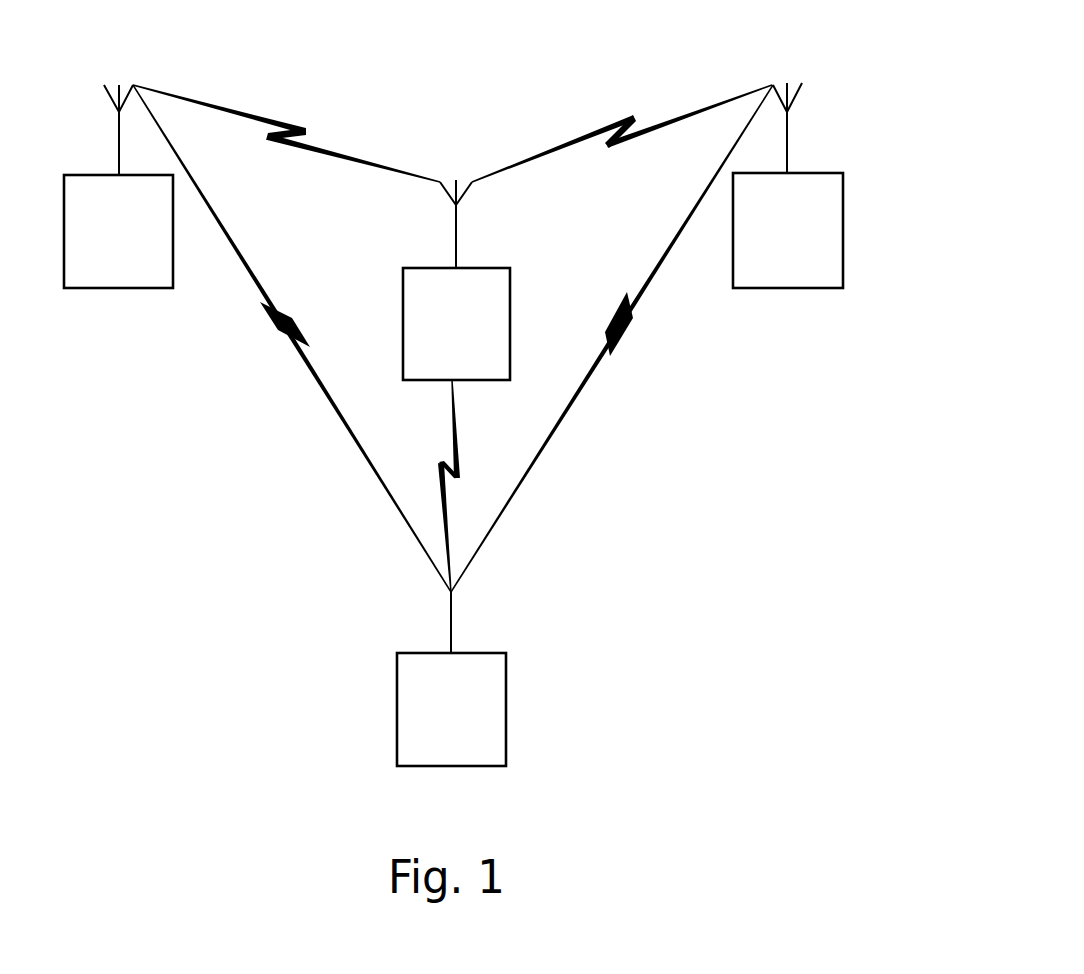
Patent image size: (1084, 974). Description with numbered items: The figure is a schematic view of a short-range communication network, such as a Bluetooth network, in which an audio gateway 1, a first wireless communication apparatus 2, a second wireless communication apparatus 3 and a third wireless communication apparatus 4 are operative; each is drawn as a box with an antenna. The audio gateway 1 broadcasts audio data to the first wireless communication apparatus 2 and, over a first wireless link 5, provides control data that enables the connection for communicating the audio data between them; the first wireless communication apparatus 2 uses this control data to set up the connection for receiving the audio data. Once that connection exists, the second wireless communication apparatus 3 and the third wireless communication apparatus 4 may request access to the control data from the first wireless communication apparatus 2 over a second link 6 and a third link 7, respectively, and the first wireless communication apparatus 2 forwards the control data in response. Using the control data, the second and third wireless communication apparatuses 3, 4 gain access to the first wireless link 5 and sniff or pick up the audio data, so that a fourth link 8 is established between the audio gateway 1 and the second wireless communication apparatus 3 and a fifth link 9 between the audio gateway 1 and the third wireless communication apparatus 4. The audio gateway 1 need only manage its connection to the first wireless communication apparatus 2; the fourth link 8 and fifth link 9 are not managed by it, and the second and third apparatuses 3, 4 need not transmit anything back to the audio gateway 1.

The audio gateway 1 is at (506, 708).
The first wireless communication apparatus 2 is at (510, 289).
The second wireless communication apparatus 3 is at (118, 288).
The third wireless communication apparatus 4 is at (843, 235).
The first wireless link 5 is at (460, 480).
The second link 6 is at (307, 132).
The third link 7 is at (622, 118).
The fourth link 8 is at (285, 330).
The fifth link 9 is at (619, 330).